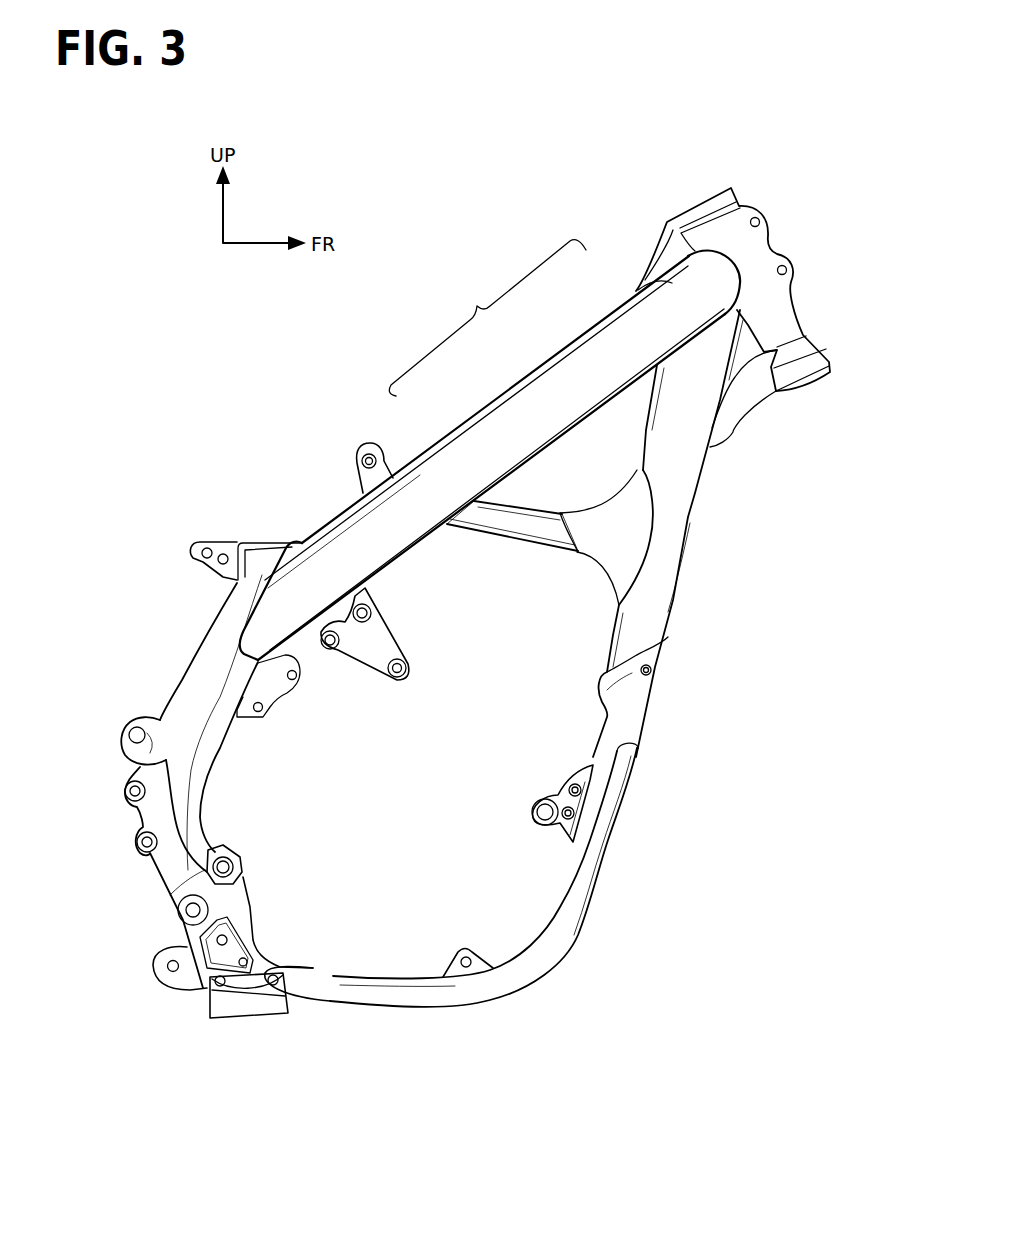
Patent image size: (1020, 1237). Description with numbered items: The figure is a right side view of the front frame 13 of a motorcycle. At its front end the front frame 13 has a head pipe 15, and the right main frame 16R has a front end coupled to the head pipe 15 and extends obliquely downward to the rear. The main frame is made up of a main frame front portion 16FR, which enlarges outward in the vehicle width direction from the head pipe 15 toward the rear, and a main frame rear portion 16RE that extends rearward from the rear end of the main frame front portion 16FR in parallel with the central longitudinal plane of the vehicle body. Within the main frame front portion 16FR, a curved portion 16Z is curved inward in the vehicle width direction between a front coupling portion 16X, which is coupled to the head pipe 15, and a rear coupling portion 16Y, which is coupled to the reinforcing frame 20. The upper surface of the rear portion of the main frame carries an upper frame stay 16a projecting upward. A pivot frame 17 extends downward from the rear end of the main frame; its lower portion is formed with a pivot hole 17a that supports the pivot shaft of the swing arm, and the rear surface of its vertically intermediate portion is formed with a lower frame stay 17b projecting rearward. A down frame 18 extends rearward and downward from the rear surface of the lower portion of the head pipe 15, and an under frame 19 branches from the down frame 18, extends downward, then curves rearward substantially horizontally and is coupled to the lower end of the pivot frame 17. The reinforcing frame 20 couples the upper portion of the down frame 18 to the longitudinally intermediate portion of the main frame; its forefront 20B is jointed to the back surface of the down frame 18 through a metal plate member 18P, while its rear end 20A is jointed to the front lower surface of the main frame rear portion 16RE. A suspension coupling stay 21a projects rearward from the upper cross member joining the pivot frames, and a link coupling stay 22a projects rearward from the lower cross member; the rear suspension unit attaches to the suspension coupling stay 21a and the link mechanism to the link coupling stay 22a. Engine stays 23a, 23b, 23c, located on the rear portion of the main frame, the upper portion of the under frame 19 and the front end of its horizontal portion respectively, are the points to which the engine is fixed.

The front frame 13 is at (504, 221).
The head pipe 15 is at (708, 206).
The right main frame 16R is at (629, 297).
The main frame rear portion 16RE is at (327, 523).
The front coupling portion 16X is at (650, 300).
The rear coupling portion 16Y is at (425, 467).
The curved portion 16Z is at (513, 398).
The main frame front portion 16FR is at (487, 318).
The upper frame stay 16a is at (368, 449).
The pivot frame 17 is at (195, 680).
The pivot hole 17a is at (232, 862).
The lower frame stay 17b is at (133, 722).
The down frame 18 is at (670, 573).
The metal plate member 18P is at (623, 510).
The under frame 19 is at (582, 937).
The reinforcing frame 20 is at (515, 541).
The rear end of reinforcing frame 20A is at (452, 530).
The forefront of reinforcing frame 20B is at (574, 556).
The suspension coupling stay 21a is at (200, 541).
The link coupling stay 22a is at (165, 968).
The engine stay 23a is at (391, 673).
The engine stay 23b is at (549, 798).
The engine stay 23c is at (464, 950).